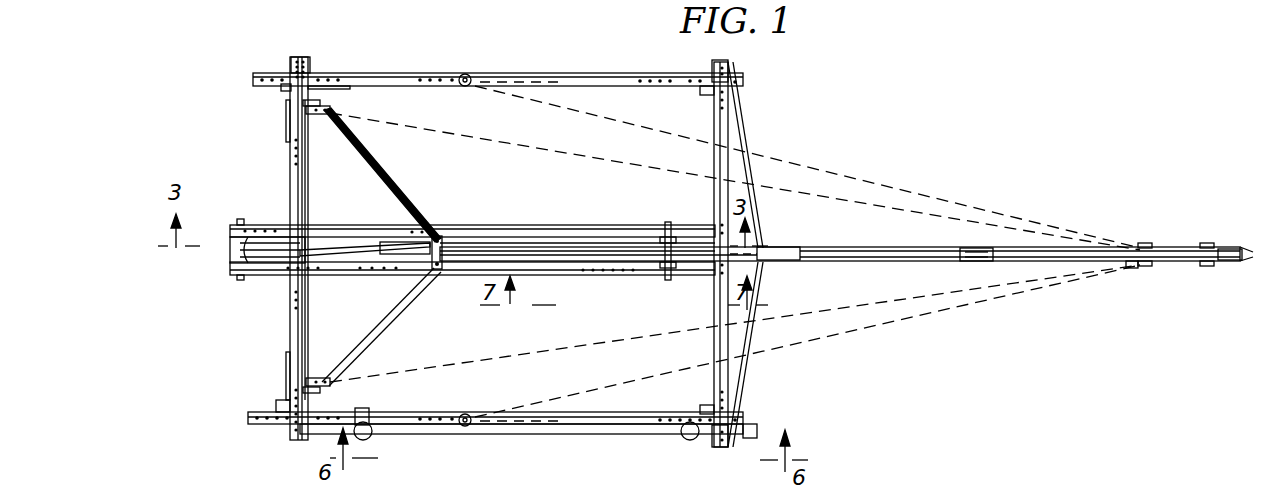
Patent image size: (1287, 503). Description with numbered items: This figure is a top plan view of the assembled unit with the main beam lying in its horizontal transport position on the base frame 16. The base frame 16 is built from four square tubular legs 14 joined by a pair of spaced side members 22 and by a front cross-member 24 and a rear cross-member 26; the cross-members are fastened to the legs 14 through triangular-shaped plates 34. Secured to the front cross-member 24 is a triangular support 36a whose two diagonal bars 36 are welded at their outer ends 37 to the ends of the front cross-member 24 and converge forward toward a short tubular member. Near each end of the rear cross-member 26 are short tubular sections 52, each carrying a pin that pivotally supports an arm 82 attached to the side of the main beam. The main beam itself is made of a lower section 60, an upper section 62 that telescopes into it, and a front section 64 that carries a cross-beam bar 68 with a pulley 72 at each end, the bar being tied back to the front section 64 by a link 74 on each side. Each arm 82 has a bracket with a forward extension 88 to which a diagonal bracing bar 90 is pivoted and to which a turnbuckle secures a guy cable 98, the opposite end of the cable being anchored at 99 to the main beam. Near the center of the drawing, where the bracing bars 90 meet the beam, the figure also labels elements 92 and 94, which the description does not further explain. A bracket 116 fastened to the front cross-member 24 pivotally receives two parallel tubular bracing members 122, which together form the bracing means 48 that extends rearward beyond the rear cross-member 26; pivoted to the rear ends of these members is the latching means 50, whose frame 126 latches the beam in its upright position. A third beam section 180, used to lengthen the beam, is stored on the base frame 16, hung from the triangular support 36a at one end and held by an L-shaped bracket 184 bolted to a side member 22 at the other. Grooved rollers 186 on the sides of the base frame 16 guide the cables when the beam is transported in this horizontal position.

The tubular legs 14 is at (280, 90).
The base frame 16 is at (283, 312).
The side members 22 is at (620, 76).
The front cross-member 24 is at (716, 162).
The rear cross-member 26 is at (289, 170).
The triangular-shaped plates 34 is at (287, 118).
The metal strips or bars 36 is at (750, 140).
The triangular support 36a is at (773, 214).
The outer ends of the bars 37 is at (730, 62).
The bracing means 48 is at (563, 222).
The latching means 50 is at (228, 258).
The short tubular sections 52 is at (308, 95).
The lower section 60 is at (508, 247).
The upper section 62 is at (888, 232).
The front section 64 is at (1045, 262).
The cross-beam bar 68 is at (1062, 248).
The pulley 72 is at (960, 262).
The link 74 is at (1162, 247).
The arm 82 is at (308, 187).
The forward extension 88 is at (330, 113).
The bracing bar 90 is at (395, 186).
The pivot bar 92 is at (440, 240).
The pivot pin 94 is at (450, 248).
The guy cable 98 is at (492, 135).
The anchoring point 99 is at (1135, 269).
The bracket 116 is at (703, 220).
The tubular bracing member 122 is at (596, 233).
The frame 126 is at (383, 236).
The third section 180 is at (590, 440).
The L-shaped bracket 184 is at (365, 415).
The grooved rollers 186 is at (372, 436).